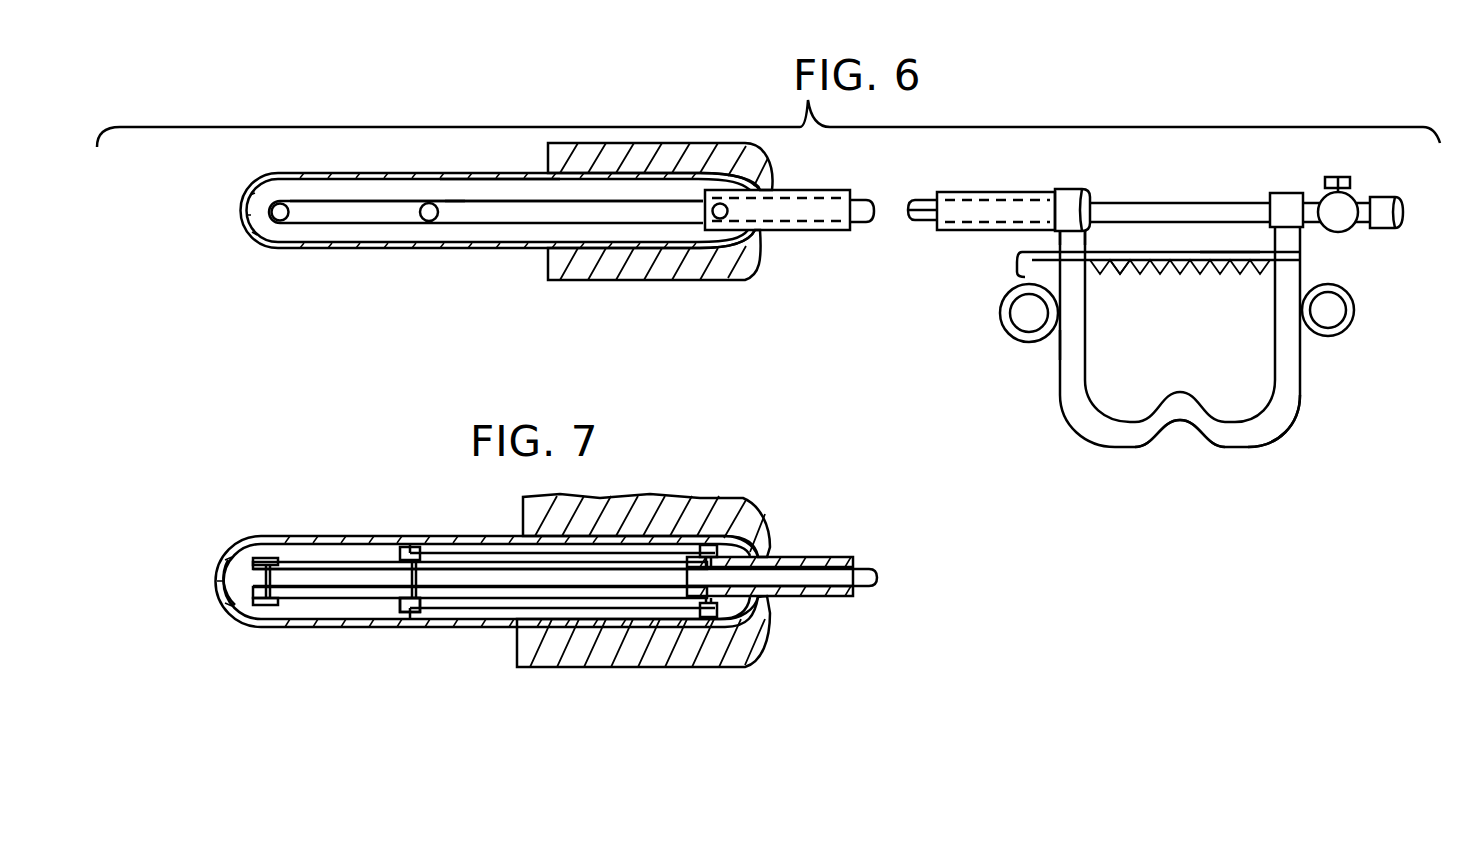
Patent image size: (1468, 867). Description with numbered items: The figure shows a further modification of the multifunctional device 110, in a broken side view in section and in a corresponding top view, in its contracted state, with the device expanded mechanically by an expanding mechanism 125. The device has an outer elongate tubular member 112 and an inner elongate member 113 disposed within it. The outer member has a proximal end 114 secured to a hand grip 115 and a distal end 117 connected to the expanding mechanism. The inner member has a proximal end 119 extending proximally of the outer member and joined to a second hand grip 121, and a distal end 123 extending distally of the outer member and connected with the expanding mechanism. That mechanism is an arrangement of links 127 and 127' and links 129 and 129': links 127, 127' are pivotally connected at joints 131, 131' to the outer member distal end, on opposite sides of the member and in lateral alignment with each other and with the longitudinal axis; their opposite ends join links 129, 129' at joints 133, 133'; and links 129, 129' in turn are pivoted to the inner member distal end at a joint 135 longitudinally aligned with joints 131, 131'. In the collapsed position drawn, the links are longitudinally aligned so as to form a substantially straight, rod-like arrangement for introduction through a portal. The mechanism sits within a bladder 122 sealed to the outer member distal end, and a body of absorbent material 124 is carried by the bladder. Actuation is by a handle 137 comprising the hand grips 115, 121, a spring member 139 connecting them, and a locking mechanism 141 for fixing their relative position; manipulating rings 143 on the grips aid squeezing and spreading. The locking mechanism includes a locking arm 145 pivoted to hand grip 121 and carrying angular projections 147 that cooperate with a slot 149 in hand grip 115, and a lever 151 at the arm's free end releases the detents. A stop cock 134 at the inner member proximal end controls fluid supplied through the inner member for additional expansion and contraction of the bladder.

In FIG. 6, the multifunctional device 110 is at (977, 173).
In FIG. 6, the outer elongate tubular member 112 is at (830, 190).
In FIG. 7, the outer elongate tubular member 112 is at (793, 558).
In FIG. 6, the inner elongate member 113 is at (1178, 198).
In FIG. 7, the inner elongate member 113 is at (872, 567).
In FIG. 6, the proximal end of outer member 114 is at (1055, 189).
In FIG. 6, the hand grip 115 is at (1060, 345).
In FIG. 6, the distal end of outer member 117 is at (603, 198).
In FIG. 6, the proximal end of inner member 119 is at (1273, 228).
In FIG. 6, the hand grip 121 is at (1300, 378).
In FIG. 6, the bladder 122 is at (323, 250).
In FIG. 7, the bladder 122 is at (257, 535).
In FIG. 7, the distal end of inner member 123 is at (250, 578).
In FIG. 6, the absorbent material 124 is at (557, 157).
In FIG. 7, the absorbent material 124 is at (657, 520).
In FIG. 6, the expanding mechanism 125 is at (453, 195).
In FIG. 6, the link 127 is at (501, 112).
In FIG. 7, the link 127 is at (562, 670).
In FIG. 7, the link 127' is at (562, 473).
In FIG. 6, the link 129 is at (459, 121).
In FIG. 7, the link 129 is at (464, 655).
In FIG. 7, the link 129' is at (480, 497).
In FIG. 6, the joint 131 is at (722, 151).
In FIG. 7, the joint 131 is at (703, 673).
In FIG. 7, the joint 131' is at (741, 492).
In FIG. 6, the joint 133 is at (360, 147).
In FIG. 7, the joint 133 is at (400, 655).
In FIG. 7, the joint 133' is at (405, 512).
In FIG. 6, the stop cock 134 is at (1353, 192).
In FIG. 6, the joint 135 is at (275, 210).
In FIG. 7, the joint 135 is at (240, 626).
In FIG. 6, the handle 137 is at (1283, 425).
In FIG. 6, the spring member 139 is at (1187, 423).
In FIG. 6, the locking mechanism 141 is at (1227, 253).
In FIG. 6, the manipulating rings 143 is at (1000, 313).
In FIG. 6, the locking arm 145 is at (1180, 255).
In FIG. 6, the angular projections 147 is at (1133, 267).
In FIG. 6, the slot 149 is at (1090, 236).
In FIG. 6, the lever 151 is at (1017, 275).